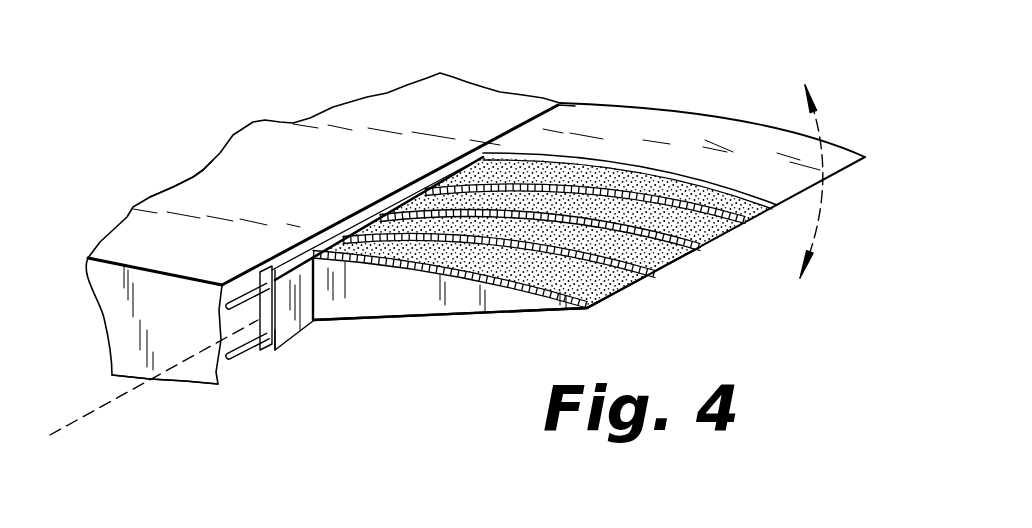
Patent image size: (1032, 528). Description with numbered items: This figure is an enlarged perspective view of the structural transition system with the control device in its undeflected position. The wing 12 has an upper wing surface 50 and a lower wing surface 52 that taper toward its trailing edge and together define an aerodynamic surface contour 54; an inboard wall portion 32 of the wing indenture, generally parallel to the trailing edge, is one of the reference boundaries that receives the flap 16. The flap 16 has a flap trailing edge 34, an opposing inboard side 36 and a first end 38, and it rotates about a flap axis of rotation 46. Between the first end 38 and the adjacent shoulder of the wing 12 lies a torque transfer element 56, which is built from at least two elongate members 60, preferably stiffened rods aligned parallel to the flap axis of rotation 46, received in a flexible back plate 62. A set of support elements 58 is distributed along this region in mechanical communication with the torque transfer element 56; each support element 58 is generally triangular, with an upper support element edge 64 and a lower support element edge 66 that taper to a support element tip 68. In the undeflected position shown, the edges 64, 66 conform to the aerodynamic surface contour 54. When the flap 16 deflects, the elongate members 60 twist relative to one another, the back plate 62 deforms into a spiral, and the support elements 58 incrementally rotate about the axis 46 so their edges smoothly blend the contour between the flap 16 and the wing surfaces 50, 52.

The wing 12 is at (326, 179).
The flap 16 is at (688, 115).
The inboard wall portion 32 is at (250, 332).
The flap trailing edge 34 is at (848, 167).
The inboard side 36 is at (560, 103).
The first end 38 is at (647, 167).
The flap axis of rotation 46 is at (88, 407).
The upper wing surface 50 is at (130, 240).
The lower wing surface 52 is at (182, 382).
The aerodynamic surface contour 54 is at (203, 170).
The torque transfer element 56 is at (287, 327).
The support elements 58 is at (448, 310).
The elongate members 60 is at (250, 293).
The flexible back plate 62 is at (303, 318).
The upper support element edge 64 is at (600, 300).
The lower support element edge 66 is at (533, 315).
The support element tip 68 is at (625, 287).